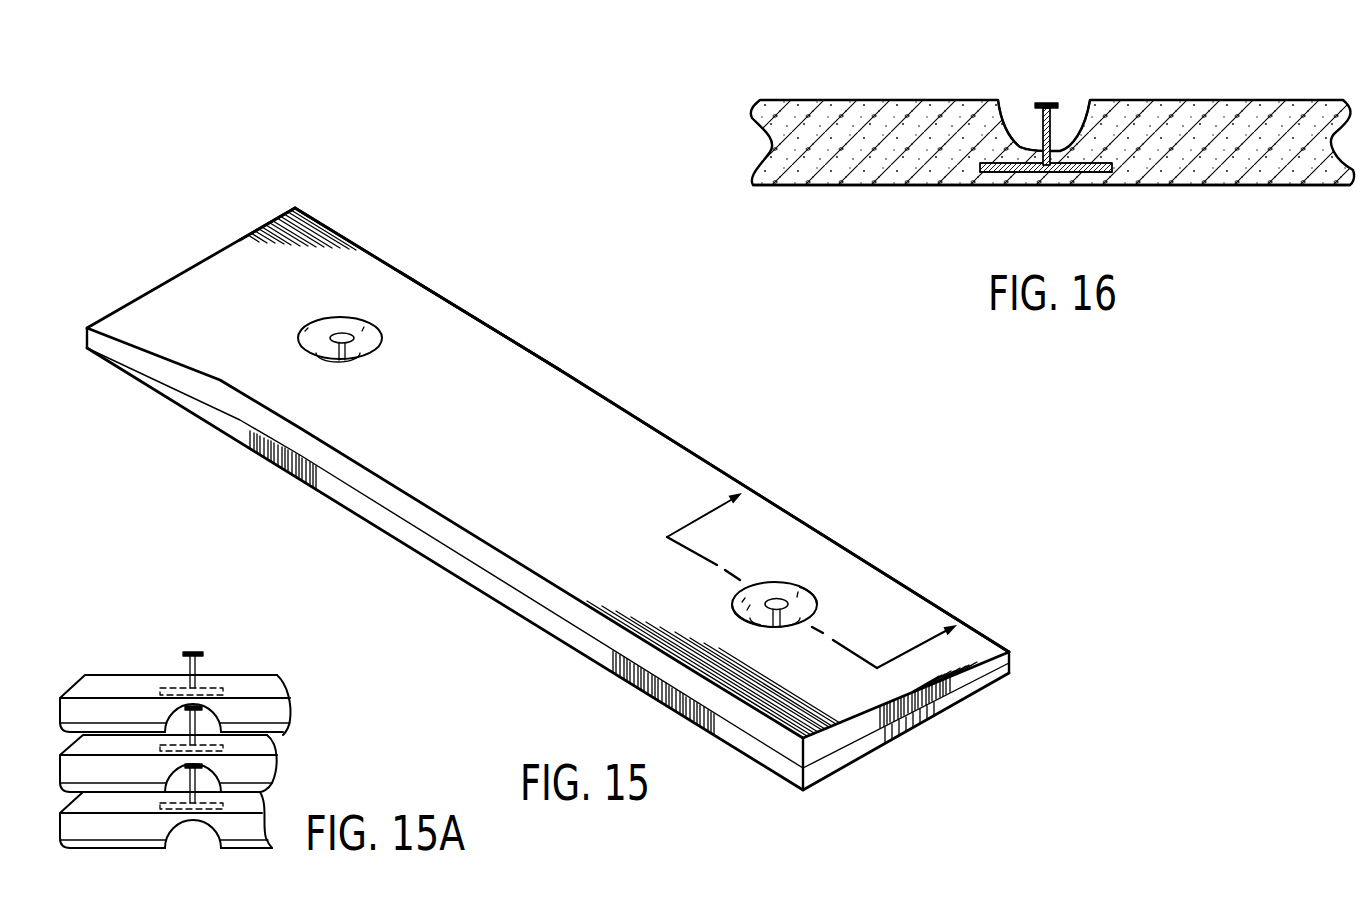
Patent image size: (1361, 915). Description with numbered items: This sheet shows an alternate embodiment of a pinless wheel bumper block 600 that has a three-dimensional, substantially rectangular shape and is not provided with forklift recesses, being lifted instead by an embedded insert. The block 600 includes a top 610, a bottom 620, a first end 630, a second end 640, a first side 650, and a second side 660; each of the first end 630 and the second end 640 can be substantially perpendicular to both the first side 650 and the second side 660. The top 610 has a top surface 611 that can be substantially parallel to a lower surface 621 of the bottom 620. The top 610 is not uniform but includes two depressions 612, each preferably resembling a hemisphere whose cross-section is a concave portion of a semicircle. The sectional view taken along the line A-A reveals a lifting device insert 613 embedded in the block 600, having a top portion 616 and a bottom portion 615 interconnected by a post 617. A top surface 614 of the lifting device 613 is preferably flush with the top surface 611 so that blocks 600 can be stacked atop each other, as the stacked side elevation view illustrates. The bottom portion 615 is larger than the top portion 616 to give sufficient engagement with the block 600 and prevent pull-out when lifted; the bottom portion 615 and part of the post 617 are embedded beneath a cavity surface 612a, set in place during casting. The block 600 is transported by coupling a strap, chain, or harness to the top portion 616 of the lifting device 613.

In FIG. 15, the pinless wheel bumper block 600 is at (568, 452).
In FIG. 15, the top 610 is at (358, 275).
In FIG. 15, the top surface 611 is at (432, 310).
In FIG. 16, the top surface 611 is at (830, 98).
In FIG. 15, the depression 612 is at (800, 536).
In FIG. 15, the cavity surface 612a is at (737, 603).
In FIG. 16, the cavity surface 612a is at (1013, 118).
In FIG. 15, the lifting device insert 613 is at (826, 607).
In FIG. 16, the lifting device insert 613 is at (1080, 87).
In FIG. 15, the top surface of the lifting device 614 is at (776, 598).
In FIG. 16, the top surface of the lifting device 614 is at (1047, 100).
In FIG. 16, the bottom portion 615 is at (1051, 203).
In FIG. 15, the top portion 616 is at (795, 603).
In FIG. 16, the top portion 616 is at (1080, 110).
In FIG. 16, the post 617 is at (1013, 175).
In FIG. 15, the bottom 620 is at (391, 594).
In FIG. 15, the lower surface 621 is at (207, 423).
In FIG. 16, the lower surface 621 is at (857, 187).
In FIG. 15, the first end 630 is at (267, 223).
In FIG. 15, the second end 640 is at (998, 670).
In FIG. 15, the first side 650 is at (497, 330).
In FIG. 15, the second side 660 is at (550, 617).